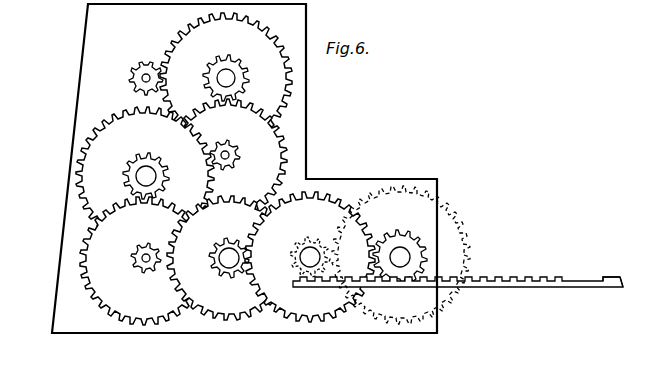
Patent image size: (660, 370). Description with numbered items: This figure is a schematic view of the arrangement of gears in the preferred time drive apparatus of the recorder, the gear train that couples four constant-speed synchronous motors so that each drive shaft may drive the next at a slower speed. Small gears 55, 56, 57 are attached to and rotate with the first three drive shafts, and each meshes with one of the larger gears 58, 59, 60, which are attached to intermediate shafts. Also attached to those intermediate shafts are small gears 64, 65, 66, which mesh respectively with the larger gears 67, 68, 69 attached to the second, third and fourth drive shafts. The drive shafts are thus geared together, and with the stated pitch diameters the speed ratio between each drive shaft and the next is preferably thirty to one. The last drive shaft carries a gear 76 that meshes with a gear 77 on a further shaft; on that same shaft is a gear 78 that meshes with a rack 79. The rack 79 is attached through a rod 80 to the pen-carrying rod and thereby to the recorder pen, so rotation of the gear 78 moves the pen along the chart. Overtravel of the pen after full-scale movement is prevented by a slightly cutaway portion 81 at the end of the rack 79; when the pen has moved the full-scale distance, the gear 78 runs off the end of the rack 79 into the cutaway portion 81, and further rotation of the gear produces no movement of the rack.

The small gear 55 is at (132, 78).
The small gear 56 is at (233, 160).
The small gear 57 is at (142, 246).
The larger gear 58 is at (169, 38).
The larger gear 59 is at (113, 115).
The larger gear 60 is at (172, 293).
The small gear 64 is at (226, 58).
The small gear 65 is at (148, 160).
The small gear 66 is at (226, 240).
The larger gear 67 is at (267, 137).
The larger gear 68 is at (103, 287).
The larger gear 69 is at (331, 190).
The gear 76 is at (308, 243).
The gear 77 is at (465, 223).
The gear 78 is at (401, 232).
The rack 79 is at (513, 277).
The rod 80 is at (618, 280).
The cutaway portion 81 is at (593, 280).